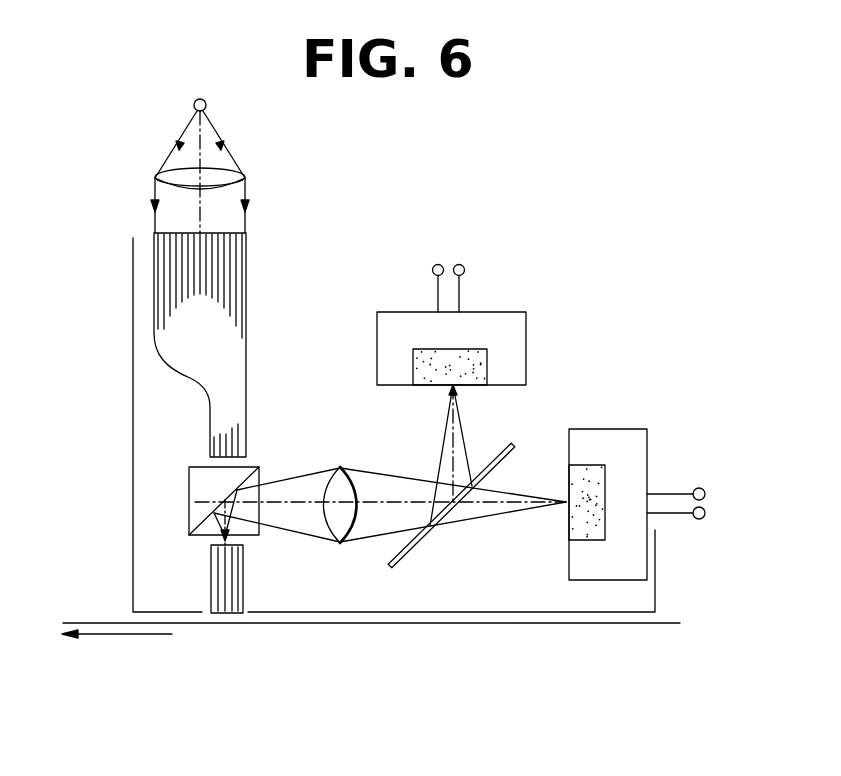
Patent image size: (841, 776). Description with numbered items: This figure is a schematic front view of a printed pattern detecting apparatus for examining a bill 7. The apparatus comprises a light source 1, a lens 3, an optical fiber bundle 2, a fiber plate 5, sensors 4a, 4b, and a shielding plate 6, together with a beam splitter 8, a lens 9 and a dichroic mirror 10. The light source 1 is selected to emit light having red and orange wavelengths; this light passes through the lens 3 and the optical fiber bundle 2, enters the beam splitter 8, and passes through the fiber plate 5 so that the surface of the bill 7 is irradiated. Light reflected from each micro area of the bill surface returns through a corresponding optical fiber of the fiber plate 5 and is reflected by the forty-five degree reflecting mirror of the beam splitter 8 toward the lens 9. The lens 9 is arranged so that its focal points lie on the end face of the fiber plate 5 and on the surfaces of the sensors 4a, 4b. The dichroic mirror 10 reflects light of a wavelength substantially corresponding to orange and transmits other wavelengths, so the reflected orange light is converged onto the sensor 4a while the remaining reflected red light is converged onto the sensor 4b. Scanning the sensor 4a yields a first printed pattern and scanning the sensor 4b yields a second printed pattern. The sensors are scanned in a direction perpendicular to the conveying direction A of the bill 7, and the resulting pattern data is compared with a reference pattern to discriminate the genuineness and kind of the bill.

The light source 1 is at (207, 106).
The optical fiber bundle 2 is at (243, 332).
The lens 3 is at (230, 169).
The sensor 4a is at (510, 314).
The sensor 4b is at (632, 432).
The fiber plate 5 is at (243, 600).
The shielding plate 6 is at (133, 450).
The bill 7 is at (352, 623).
The beam splitter 8 is at (259, 468).
The lens 9 is at (345, 478).
The dichroic mirror 10 is at (517, 447).
The conveying direction A is at (168, 636).